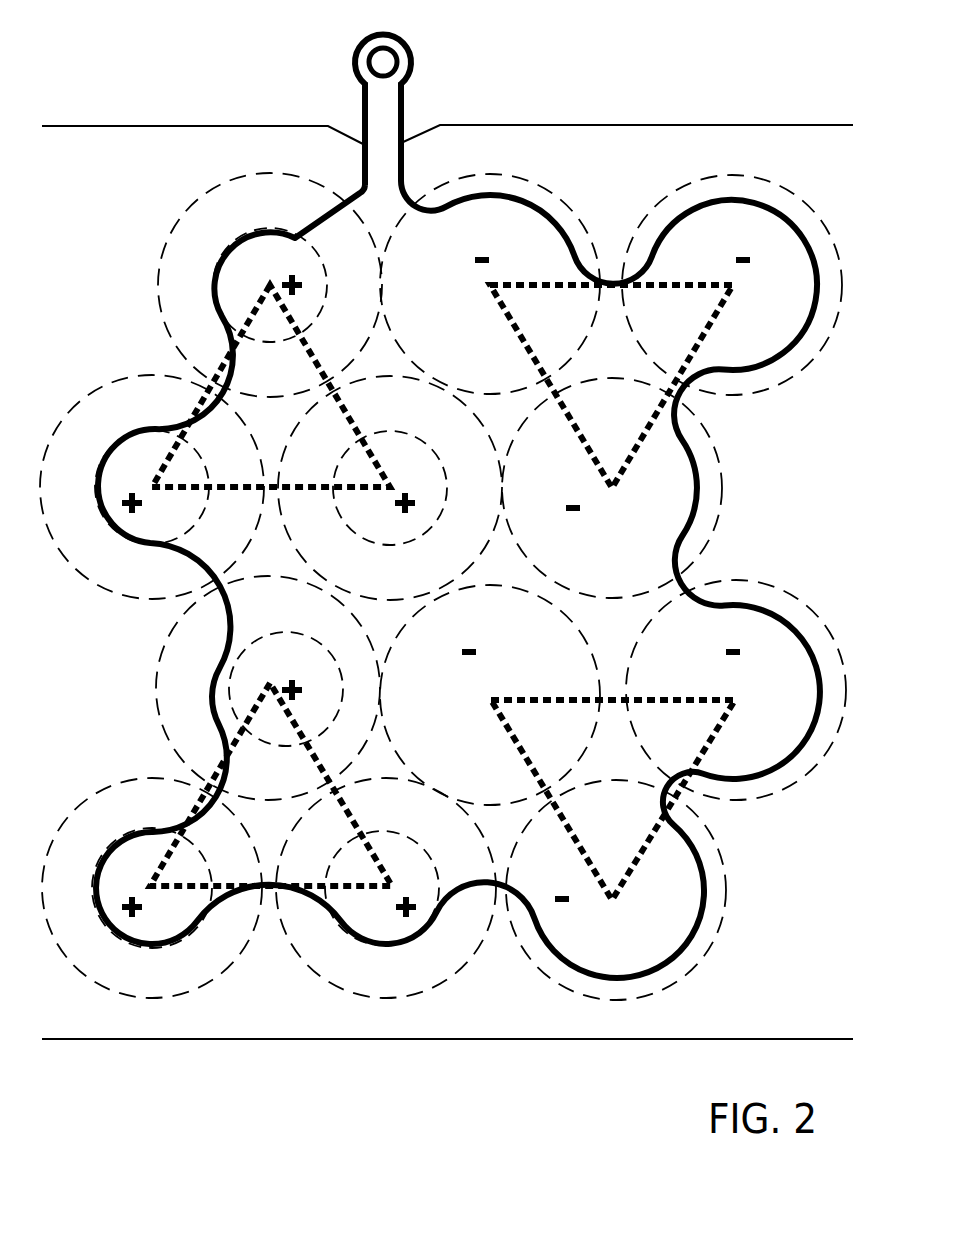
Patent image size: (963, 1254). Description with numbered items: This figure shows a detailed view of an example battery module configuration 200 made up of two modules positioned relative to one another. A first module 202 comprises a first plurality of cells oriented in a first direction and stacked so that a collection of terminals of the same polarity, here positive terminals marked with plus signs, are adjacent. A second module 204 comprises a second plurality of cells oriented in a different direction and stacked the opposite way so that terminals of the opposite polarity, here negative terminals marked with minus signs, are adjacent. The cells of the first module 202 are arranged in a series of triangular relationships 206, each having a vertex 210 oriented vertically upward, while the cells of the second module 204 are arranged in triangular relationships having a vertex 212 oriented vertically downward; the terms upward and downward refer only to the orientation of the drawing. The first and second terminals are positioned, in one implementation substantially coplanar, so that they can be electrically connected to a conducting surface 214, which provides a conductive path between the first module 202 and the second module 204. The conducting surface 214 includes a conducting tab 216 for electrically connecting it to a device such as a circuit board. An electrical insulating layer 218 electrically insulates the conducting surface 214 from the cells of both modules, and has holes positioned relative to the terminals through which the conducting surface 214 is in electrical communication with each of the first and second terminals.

The electrode assembly 200 is at (116, 66).
The first module 202 is at (270, 1008).
The second module 204 is at (610, 158).
The triangular relationships 206 is at (222, 363).
The vertex 210 is at (270, 285).
The vertex 212 is at (613, 488).
The conducting surface 214 is at (536, 929).
The conducting tab 216 is at (365, 105).
The electrical insulating layer 218 is at (760, 125).